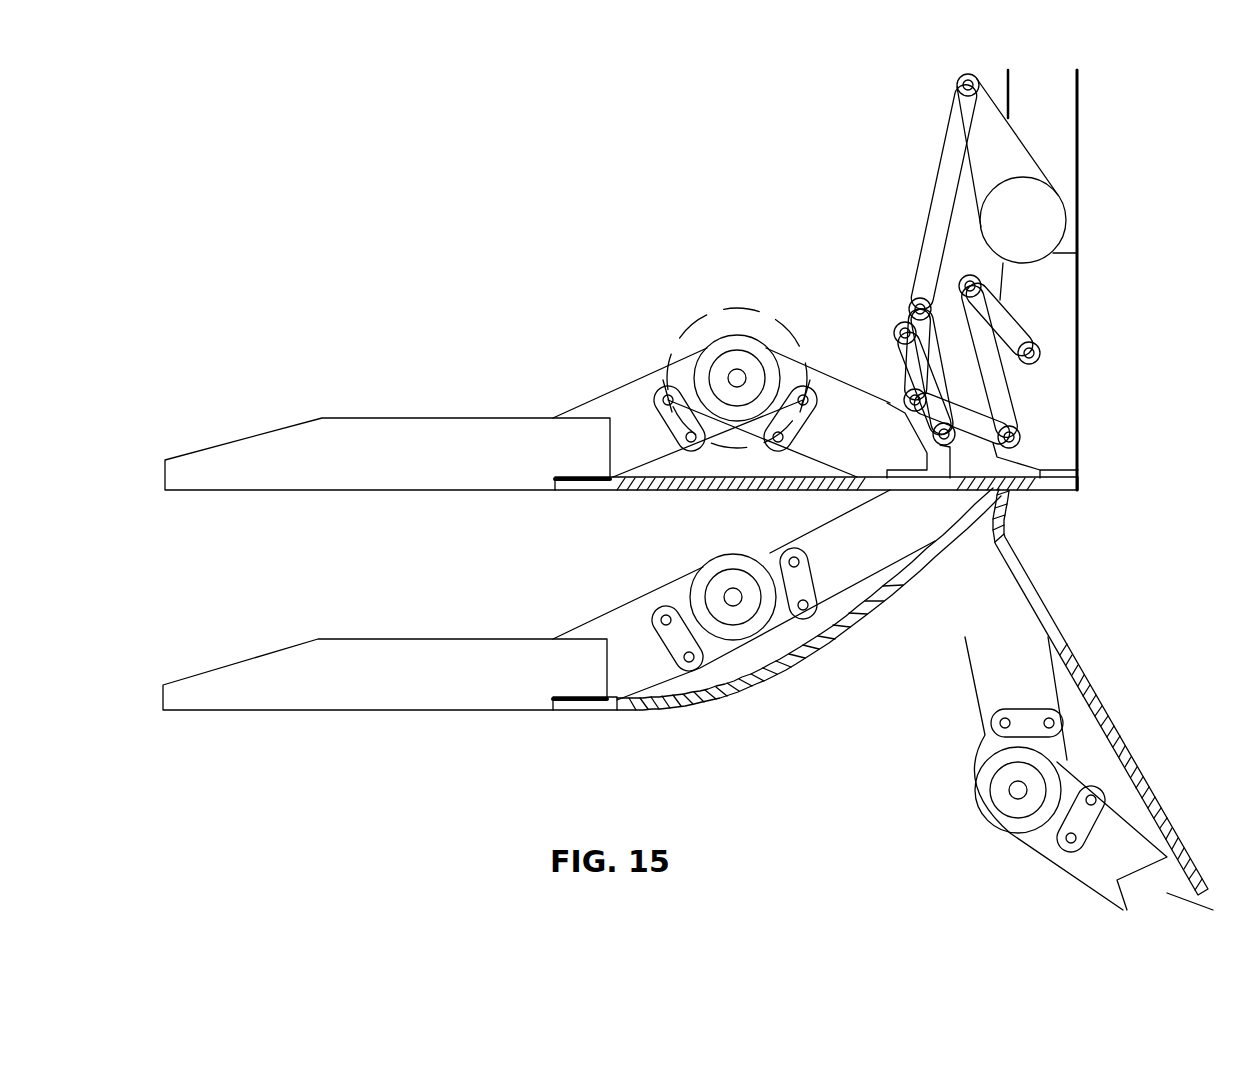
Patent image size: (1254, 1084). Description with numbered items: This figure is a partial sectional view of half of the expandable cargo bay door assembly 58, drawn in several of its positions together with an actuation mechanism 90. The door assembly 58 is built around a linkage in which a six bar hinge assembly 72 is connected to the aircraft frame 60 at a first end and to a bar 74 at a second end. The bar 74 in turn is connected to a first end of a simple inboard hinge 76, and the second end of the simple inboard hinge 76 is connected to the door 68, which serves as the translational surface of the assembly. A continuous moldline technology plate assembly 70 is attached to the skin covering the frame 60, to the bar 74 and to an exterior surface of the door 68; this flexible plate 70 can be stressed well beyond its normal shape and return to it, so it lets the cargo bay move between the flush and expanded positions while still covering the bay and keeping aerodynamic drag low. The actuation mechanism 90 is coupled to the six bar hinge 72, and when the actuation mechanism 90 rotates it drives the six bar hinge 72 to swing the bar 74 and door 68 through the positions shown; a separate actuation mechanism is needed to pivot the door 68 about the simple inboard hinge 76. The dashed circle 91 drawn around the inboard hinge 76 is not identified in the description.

The door assembly 58 is at (614, 164).
The frame 60 is at (1070, 245).
The doors 68 is at (345, 418).
The continuous moldline technology (CMT) plate assembly 70 is at (700, 492).
The six bar hinge assembly 72 is at (1010, 335).
The bar 74 is at (835, 405).
The simple inboard hinge 76 is at (737, 340).
The actuation mechanism 90 is at (990, 132).
The roller path circle 91 is at (755, 315).